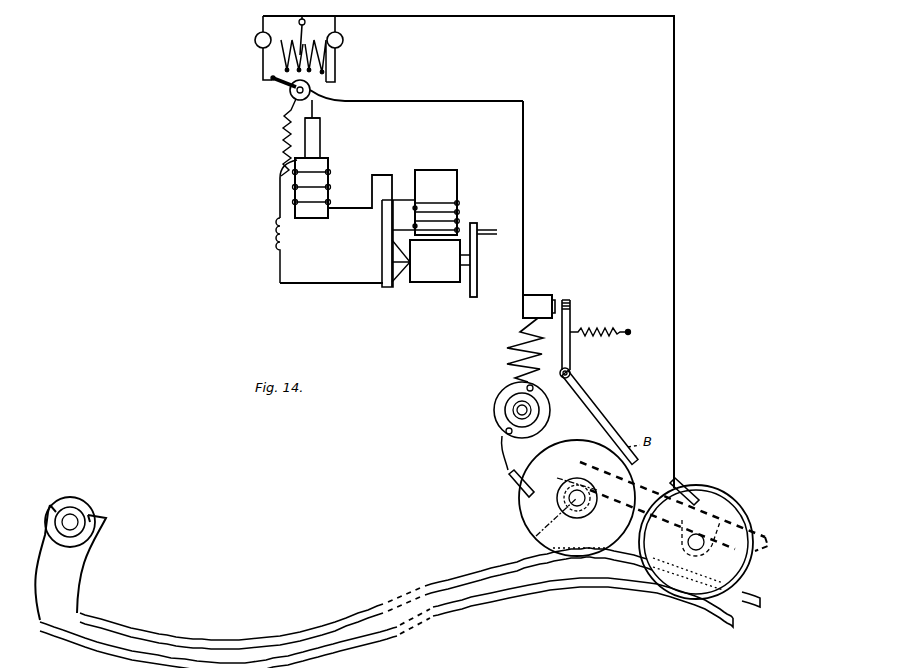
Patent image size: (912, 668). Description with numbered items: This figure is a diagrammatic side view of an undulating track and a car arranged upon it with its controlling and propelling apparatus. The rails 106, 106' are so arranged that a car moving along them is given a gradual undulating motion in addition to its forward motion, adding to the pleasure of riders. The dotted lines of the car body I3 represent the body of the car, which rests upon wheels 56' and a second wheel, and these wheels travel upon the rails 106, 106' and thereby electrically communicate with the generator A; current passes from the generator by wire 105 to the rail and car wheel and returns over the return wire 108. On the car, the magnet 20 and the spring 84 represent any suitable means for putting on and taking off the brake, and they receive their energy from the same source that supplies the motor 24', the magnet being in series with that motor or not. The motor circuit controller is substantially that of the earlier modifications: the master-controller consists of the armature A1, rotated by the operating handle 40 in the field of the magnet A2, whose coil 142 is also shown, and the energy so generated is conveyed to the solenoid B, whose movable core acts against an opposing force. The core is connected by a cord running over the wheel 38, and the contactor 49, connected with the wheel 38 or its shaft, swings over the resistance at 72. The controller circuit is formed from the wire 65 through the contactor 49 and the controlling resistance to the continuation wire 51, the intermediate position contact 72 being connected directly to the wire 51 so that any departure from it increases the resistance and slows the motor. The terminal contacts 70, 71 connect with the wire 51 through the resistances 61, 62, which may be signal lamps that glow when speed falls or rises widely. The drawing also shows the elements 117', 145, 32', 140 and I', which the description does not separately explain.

The wire 51 is at (430, 16).
The resistance 61 is at (254, 42).
The resistance 62 is at (344, 42).
The intermediate position contact 72 is at (326, 72).
The terminal contact 70 is at (270, 89).
The terminal contact 71 is at (326, 95).
The contactor 49 is at (288, 97).
The wheel 38 is at (306, 109).
The wire 65 is at (470, 102).
The spring 117' is at (256, 158).
The solenoid B is at (330, 188).
The coil 145 is at (274, 243).
The magnet A2 is at (436, 202).
The coil 142 is at (460, 207).
The armature A1 is at (440, 284).
The handle 40 is at (492, 232).
The magnet 20 is at (546, 293).
The spring 84 is at (600, 338).
The disk 32' is at (491, 410).
The motor 24' is at (481, 415).
The wheel 56' is at (502, 478).
The wheel 140 is at (556, 512).
The car body I3 is at (710, 542).
The generator A is at (70, 511).
The wire 105 is at (86, 572).
The return wire 108 is at (38, 614).
The rail 106 is at (438, 598).
The rail 106' is at (418, 623).
The wheel I' is at (663, 664).